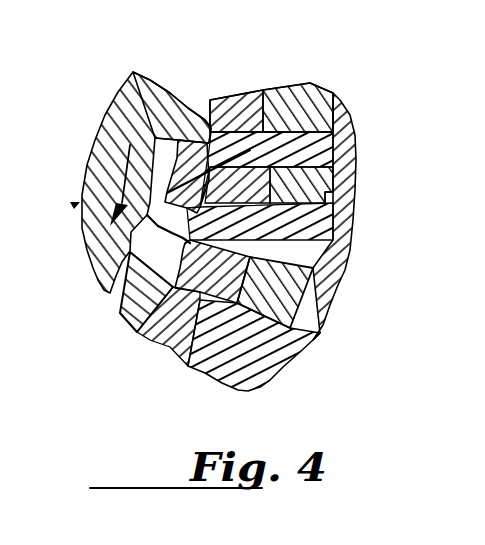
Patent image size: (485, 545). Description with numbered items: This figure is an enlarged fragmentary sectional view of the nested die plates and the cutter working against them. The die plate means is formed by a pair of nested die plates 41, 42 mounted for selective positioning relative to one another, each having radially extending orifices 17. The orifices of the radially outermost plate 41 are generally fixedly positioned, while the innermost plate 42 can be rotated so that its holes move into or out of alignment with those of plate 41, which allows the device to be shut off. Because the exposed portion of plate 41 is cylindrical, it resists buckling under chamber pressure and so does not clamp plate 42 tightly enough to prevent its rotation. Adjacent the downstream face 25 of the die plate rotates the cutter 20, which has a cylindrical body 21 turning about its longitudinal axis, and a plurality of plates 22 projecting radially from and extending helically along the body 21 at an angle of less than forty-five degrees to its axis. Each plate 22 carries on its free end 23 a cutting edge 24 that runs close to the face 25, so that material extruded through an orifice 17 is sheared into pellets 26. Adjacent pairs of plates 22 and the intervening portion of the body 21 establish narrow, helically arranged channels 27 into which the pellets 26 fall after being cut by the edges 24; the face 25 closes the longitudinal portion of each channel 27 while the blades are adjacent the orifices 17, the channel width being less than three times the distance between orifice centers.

The orifice 17 is at (273, 82).
The cutter 20 is at (112, 182).
The cylindrical body 21 is at (129, 326).
The plates 22 is at (172, 92).
The free end 23 is at (246, 215).
The cutting edge 24 is at (183, 198).
The downstream face 25 is at (113, 251).
The pellets 26 is at (90, 340).
The channels 27 is at (97, 226).
The outermost die plate 41 is at (361, 216).
The innermost die plate 42 is at (359, 185).